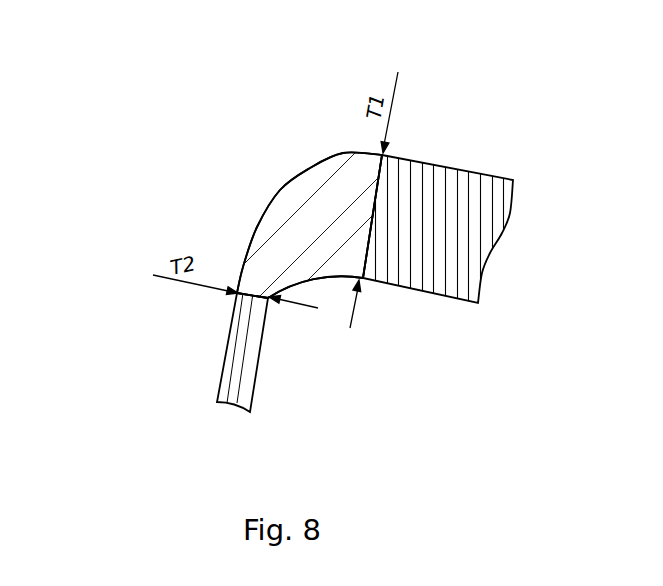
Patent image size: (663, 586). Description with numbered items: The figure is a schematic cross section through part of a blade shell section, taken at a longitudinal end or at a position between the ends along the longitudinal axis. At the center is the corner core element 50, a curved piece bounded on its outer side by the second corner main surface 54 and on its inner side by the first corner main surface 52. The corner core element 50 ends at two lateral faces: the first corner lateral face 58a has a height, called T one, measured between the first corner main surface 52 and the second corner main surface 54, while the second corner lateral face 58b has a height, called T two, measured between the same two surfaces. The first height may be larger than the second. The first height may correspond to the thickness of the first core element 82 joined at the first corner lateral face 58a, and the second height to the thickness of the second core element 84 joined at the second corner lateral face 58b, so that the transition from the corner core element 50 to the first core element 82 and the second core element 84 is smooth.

The corner core element 50 is at (297, 205).
The first corner main surface 52 is at (305, 281).
The second corner main surface 54 is at (258, 223).
The first corner lateral face 58a is at (372, 207).
The second corner lateral face 58b is at (257, 293).
The first core element 82 is at (457, 192).
The second core element 84 is at (227, 372).